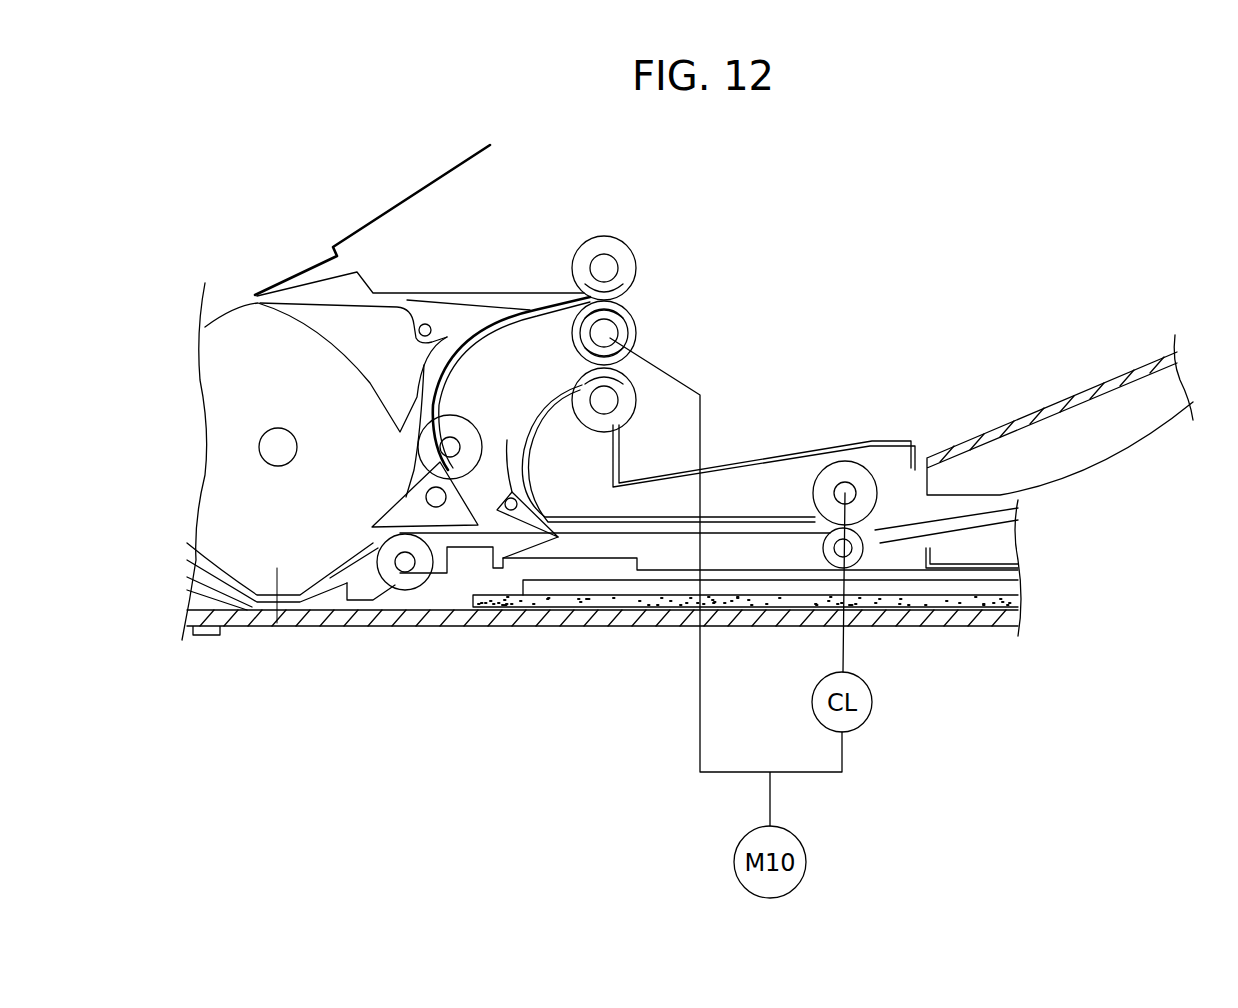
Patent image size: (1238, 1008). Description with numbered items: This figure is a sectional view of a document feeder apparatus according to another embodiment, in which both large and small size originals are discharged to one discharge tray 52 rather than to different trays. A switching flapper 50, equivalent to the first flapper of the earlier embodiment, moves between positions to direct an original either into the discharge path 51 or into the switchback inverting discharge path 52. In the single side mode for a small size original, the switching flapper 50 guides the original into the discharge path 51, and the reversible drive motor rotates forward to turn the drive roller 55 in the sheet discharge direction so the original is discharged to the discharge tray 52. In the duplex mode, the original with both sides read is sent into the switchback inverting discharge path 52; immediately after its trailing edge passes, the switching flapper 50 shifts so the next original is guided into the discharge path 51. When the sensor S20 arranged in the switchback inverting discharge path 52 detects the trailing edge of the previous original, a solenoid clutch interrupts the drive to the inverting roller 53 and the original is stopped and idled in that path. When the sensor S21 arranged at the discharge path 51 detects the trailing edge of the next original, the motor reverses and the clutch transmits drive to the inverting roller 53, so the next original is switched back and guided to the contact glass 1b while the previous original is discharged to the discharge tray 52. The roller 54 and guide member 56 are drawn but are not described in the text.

The second contact glass 1b is at (252, 622).
The switching flapper 50 is at (407, 513).
The discharge path 51 is at (443, 373).
The discharge tray 52 is at (742, 527).
The inverting roller 53 is at (843, 473).
The roller 54 is at (502, 482).
The drive roller 55 is at (632, 338).
The guide member 56 is at (395, 302).
The sensor S20 is at (571, 497).
The sensor S21 is at (551, 275).